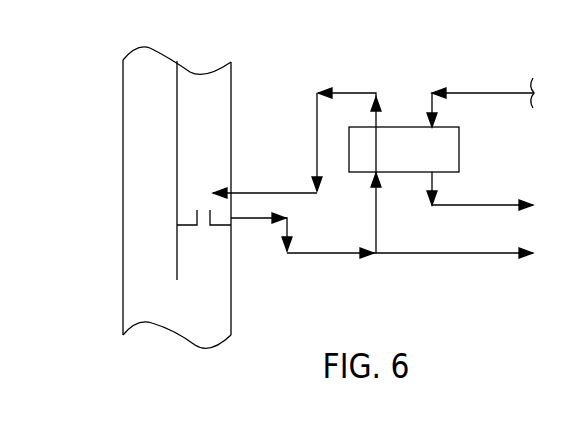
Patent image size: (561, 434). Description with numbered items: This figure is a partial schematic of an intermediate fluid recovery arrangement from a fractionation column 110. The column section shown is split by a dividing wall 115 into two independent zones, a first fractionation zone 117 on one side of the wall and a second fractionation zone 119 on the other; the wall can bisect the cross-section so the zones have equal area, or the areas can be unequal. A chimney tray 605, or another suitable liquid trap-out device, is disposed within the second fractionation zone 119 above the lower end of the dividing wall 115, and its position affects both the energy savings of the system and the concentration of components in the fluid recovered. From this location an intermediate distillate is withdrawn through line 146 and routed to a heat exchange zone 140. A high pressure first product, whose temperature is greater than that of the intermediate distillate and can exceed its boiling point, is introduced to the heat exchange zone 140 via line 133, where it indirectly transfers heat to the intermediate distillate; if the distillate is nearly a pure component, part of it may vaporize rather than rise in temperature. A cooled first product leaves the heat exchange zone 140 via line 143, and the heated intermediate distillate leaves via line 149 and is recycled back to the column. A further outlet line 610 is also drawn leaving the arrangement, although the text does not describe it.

The fractionation column 110 is at (123, 75).
The dividing wall 115 is at (177, 113).
The first fractionation zone 117 is at (138, 176).
The second fractionation zone 119 is at (220, 89).
The chimney tray 605 is at (195, 228).
The line 149 is at (352, 89).
The heat exchange zone 140 is at (405, 125).
The line 133 is at (499, 89).
The line 143 is at (496, 205).
The line 146 is at (312, 255).
The outlet flow path 610 is at (455, 255).